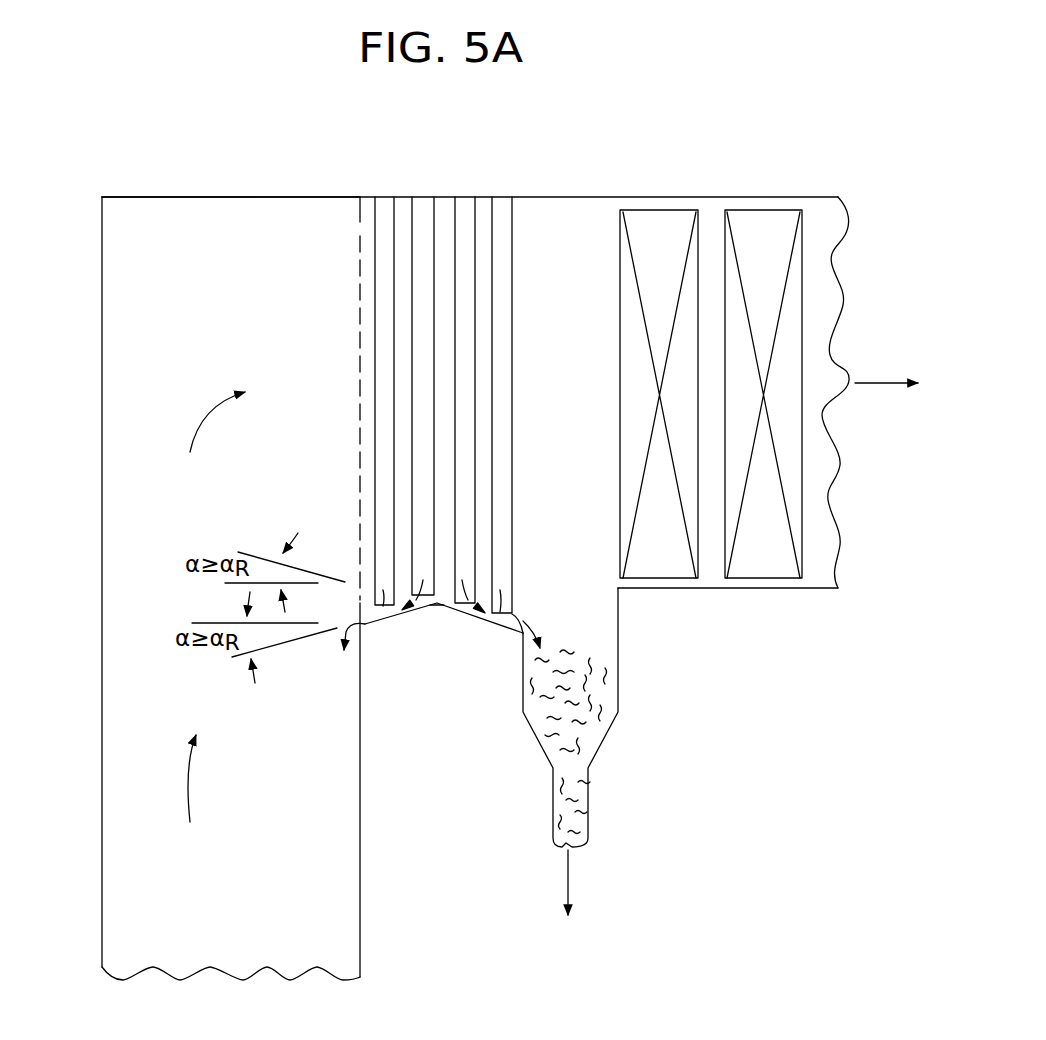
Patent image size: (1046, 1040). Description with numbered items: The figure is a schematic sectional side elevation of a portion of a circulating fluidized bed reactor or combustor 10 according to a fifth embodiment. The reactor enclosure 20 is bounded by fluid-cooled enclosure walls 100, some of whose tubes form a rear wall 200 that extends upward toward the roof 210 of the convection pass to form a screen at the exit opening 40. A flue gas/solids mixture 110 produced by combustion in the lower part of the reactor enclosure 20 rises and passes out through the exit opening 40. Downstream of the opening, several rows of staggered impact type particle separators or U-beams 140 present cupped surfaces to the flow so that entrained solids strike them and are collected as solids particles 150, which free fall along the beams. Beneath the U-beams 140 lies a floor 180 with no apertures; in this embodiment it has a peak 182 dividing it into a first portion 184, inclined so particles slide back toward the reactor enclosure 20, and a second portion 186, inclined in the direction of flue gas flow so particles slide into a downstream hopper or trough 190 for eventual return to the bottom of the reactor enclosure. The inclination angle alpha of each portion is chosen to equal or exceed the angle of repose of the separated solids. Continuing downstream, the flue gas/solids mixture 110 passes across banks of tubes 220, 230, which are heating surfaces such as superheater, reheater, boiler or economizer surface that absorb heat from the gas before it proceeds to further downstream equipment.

The circulating fluidized bed reactor or combustor 10 is at (742, 806).
The reactor enclosure 20 is at (296, 932).
The exit opening 40 is at (360, 222).
The enclosure walls 100 is at (153, 197).
The flue gas/solids mixture 110 is at (880, 382).
The impact type particle separators 140 is at (504, 210).
The collected solids particles 150 is at (526, 618).
The floor 180 is at (418, 613).
The peak 182 is at (437, 606).
The first portion 184 is at (373, 626).
The second portion 186 is at (508, 628).
The hopper or trough 190 is at (598, 740).
The rear wall 200 is at (360, 870).
The roof 210 is at (570, 197).
The bank of tubes 220 is at (660, 228).
The bank of tubes 230 is at (762, 228).